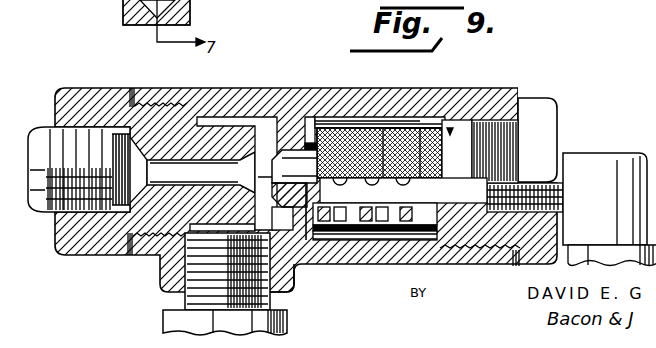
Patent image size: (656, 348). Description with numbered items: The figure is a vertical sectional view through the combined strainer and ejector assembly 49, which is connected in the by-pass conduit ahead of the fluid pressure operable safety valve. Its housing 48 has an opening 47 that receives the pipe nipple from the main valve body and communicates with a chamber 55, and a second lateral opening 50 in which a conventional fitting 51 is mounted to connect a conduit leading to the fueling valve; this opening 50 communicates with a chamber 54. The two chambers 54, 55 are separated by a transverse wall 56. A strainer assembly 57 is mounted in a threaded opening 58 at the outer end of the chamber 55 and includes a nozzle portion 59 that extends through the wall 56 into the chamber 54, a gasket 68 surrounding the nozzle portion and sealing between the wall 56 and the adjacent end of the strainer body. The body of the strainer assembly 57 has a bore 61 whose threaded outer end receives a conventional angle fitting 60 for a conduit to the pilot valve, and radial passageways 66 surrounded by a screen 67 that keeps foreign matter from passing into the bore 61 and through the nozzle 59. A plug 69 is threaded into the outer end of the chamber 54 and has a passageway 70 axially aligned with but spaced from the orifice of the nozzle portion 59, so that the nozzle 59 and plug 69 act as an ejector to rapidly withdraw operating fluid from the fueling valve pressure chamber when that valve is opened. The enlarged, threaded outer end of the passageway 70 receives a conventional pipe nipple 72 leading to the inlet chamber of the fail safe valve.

The plug 69 is at (104, 88).
The housing 48 is at (219, 88).
The chamber 54 is at (259, 116).
The gasket 68 is at (310, 116).
The chamber 55 is at (347, 120).
The opening 47 is at (368, 127).
The screen 67 is at (408, 127).
The strainer assembly 57 is at (450, 130).
The threaded opening 58 is at (487, 120).
The combined strainer and ejector assembly 49 is at (507, 97).
The angle fitting 60 is at (621, 153).
The nozzle portion 59 is at (289, 151).
The passageway 70 is at (185, 187).
The pipe nipple 72 is at (44, 205).
The transverse wall 56 is at (292, 222).
The radial passageways 66 is at (407, 205).
The bore 61 is at (465, 207).
The lateral opening 50 is at (293, 283).
The fitting 51 is at (165, 318).